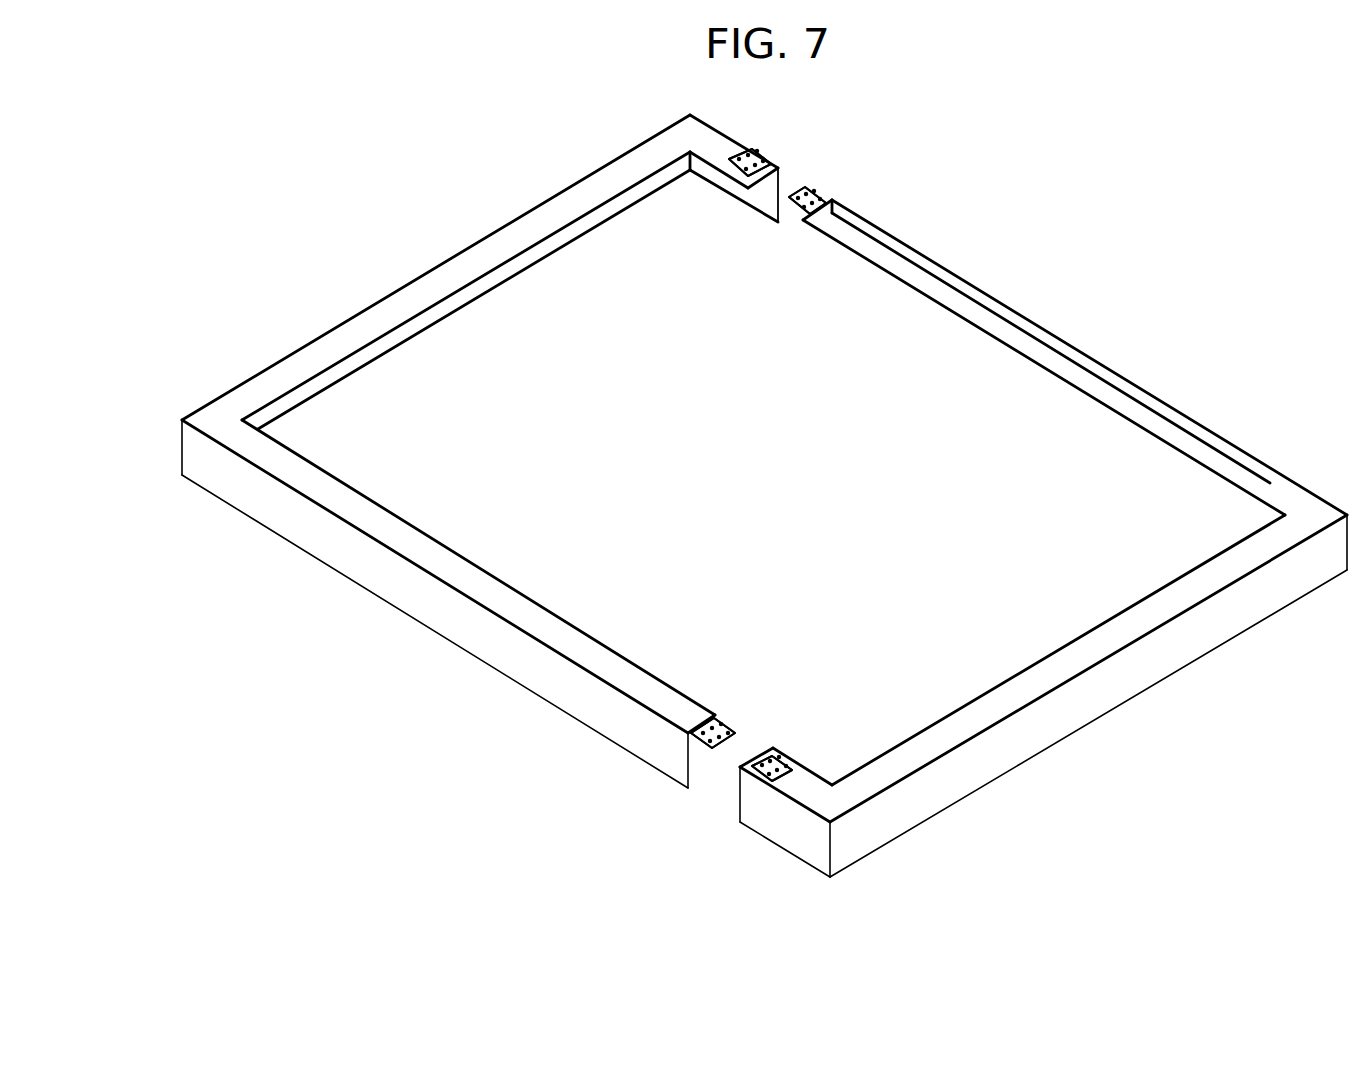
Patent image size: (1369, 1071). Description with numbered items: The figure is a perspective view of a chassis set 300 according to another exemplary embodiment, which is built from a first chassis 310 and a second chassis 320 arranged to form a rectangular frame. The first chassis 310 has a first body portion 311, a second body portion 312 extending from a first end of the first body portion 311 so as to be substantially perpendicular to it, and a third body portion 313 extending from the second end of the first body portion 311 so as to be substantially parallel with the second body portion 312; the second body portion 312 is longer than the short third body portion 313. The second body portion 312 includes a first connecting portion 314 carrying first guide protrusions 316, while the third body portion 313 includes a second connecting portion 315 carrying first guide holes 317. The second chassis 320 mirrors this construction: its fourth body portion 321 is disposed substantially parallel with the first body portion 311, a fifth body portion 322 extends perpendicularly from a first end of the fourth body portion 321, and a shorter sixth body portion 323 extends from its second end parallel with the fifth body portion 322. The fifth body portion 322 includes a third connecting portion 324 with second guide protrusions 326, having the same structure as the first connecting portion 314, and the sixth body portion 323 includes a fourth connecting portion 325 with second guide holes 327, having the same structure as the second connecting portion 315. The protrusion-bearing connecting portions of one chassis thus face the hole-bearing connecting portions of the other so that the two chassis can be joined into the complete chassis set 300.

The chassis set 300 is at (485, 142).
The first chassis 310 is at (514, 457).
The first body portion 311 is at (445, 277).
The second body portion 312 is at (528, 618).
The third body portion 313 is at (705, 132).
The first connecting portion 314 is at (688, 740).
The second connecting portion 315 is at (734, 167).
The first guide protrusions 316 is at (720, 734).
The first guide holes 317 is at (758, 153).
The second chassis 320 is at (1006, 521).
The fourth body portion 321 is at (1079, 660).
The fifth body portion 322 is at (1046, 347).
The sixth body portion 323 is at (803, 793).
The third connecting portion 324 is at (815, 192).
The fourth connecting portion 325 is at (748, 768).
The second guide protrusions 326 is at (802, 203).
The second guide holes 327 is at (773, 767).